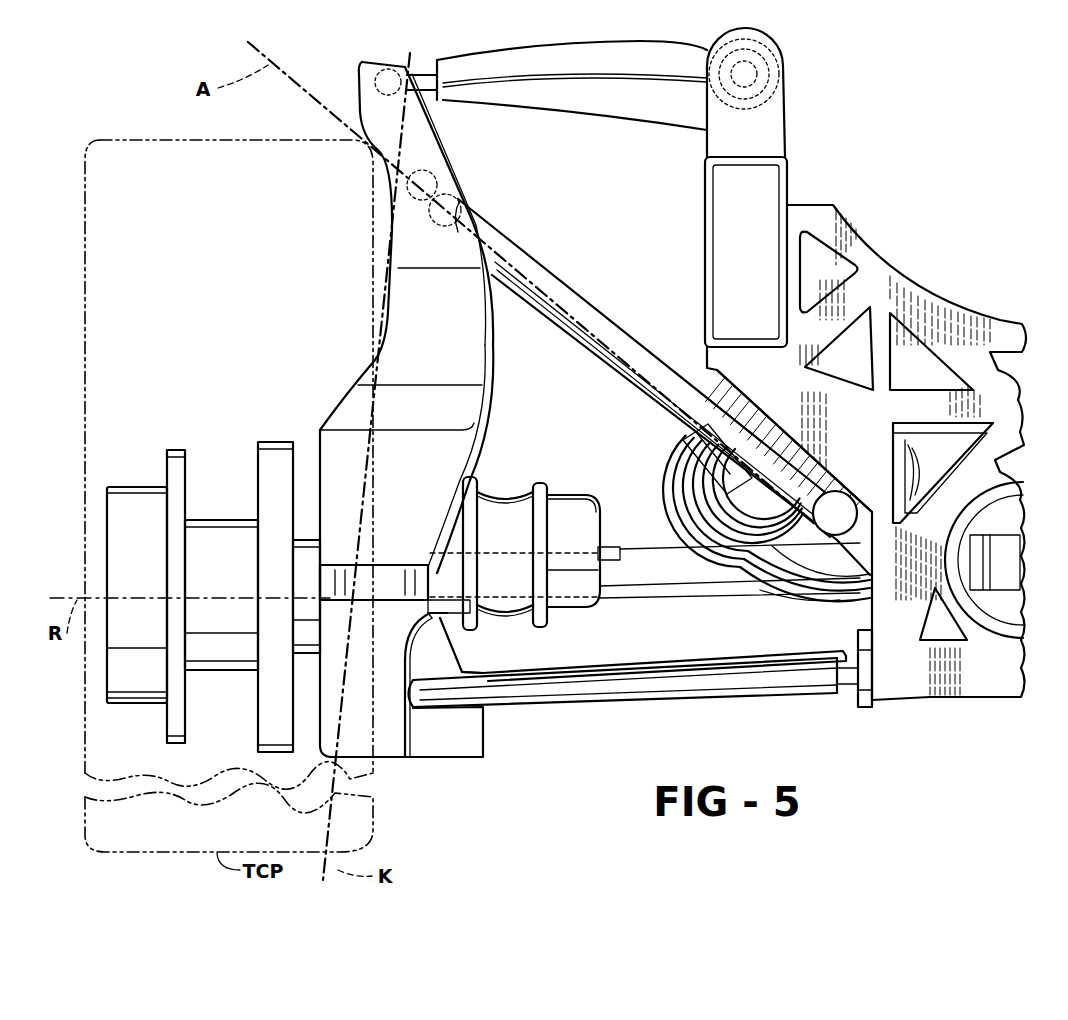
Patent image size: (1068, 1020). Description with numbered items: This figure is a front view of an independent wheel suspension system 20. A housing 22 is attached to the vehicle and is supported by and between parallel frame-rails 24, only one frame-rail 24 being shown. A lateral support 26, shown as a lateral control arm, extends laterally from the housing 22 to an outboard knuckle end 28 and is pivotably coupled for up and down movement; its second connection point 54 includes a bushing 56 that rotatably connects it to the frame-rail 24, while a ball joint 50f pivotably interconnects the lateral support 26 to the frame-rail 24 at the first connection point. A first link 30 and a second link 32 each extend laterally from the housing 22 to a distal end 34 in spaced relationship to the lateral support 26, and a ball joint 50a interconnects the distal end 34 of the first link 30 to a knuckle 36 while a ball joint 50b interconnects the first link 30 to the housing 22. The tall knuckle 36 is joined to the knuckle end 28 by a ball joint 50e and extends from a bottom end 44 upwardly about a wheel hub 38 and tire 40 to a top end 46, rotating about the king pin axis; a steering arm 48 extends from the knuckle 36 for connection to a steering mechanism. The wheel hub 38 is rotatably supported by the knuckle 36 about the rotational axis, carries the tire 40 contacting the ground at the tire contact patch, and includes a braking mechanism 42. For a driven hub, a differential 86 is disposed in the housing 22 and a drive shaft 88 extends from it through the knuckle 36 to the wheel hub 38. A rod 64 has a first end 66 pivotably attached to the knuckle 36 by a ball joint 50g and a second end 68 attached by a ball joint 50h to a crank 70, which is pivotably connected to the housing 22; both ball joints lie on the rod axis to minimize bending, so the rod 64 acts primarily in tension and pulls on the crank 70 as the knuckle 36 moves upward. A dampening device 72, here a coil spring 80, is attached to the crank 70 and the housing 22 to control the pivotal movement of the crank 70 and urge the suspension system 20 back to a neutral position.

The independent wheel suspension system 20 is at (868, 117).
The housing 22 is at (940, 308).
The frame-rail 24 is at (787, 187).
The lateral support 26 is at (560, 45).
The knuckle end 28 is at (440, 62).
The first link 30 is at (577, 710).
The second link 32 is at (732, 657).
The distal end 34 is at (445, 713).
The knuckle 36 is at (388, 313).
The wheel hub 38 is at (107, 557).
The tire 40 is at (80, 345).
The braking mechanism 42 is at (505, 500).
The bottom end 44 is at (380, 760).
The top end 46 is at (375, 58).
The steering arm 48 is at (397, 573).
The ball joint 50a is at (425, 675).
The ball joint 50b is at (840, 700).
The ball joint 50e is at (388, 66).
The ball joint 50f is at (753, 90).
The ball joint 50g is at (457, 170).
The ball joint 50h is at (862, 538).
The second connection point 54 is at (737, 45).
The bushing 56 is at (748, 70).
The rod 64 is at (580, 289).
The first end 66 is at (463, 198).
The second end 68 is at (727, 490).
The crank 70 is at (693, 478).
The dampening device 72 is at (670, 446).
The coil spring 80 is at (795, 592).
The differential 86 is at (1020, 533).
The drive shaft 88 is at (647, 593).